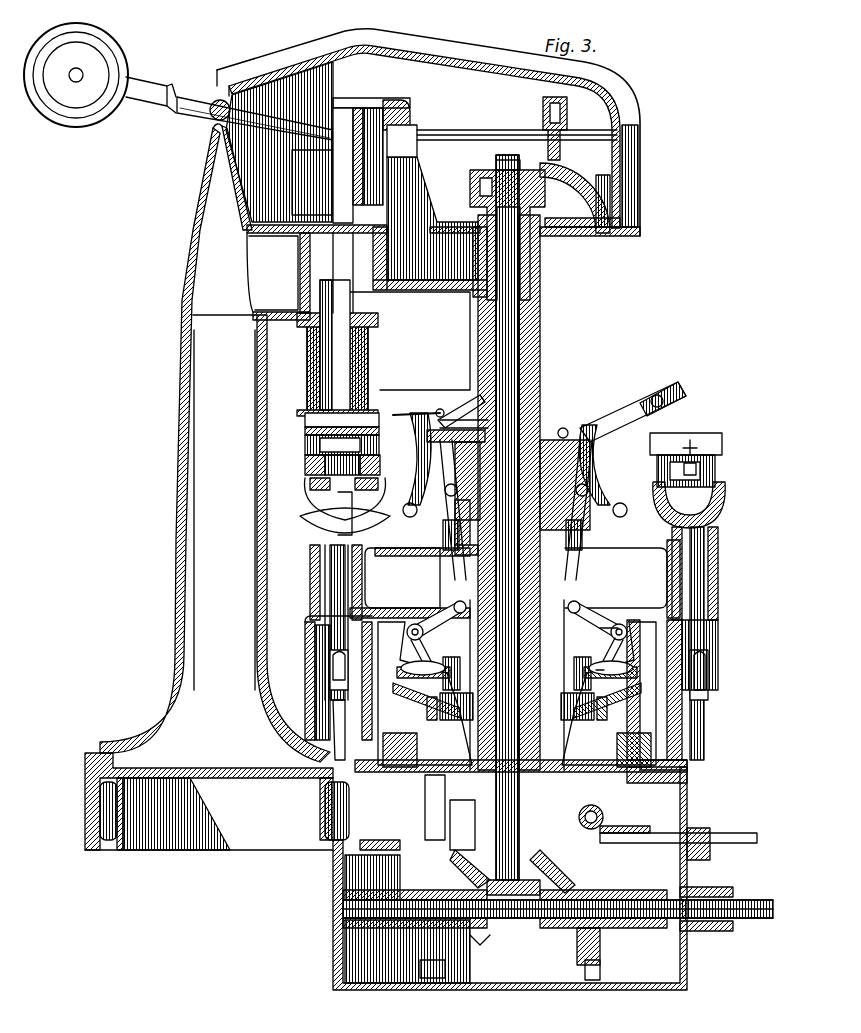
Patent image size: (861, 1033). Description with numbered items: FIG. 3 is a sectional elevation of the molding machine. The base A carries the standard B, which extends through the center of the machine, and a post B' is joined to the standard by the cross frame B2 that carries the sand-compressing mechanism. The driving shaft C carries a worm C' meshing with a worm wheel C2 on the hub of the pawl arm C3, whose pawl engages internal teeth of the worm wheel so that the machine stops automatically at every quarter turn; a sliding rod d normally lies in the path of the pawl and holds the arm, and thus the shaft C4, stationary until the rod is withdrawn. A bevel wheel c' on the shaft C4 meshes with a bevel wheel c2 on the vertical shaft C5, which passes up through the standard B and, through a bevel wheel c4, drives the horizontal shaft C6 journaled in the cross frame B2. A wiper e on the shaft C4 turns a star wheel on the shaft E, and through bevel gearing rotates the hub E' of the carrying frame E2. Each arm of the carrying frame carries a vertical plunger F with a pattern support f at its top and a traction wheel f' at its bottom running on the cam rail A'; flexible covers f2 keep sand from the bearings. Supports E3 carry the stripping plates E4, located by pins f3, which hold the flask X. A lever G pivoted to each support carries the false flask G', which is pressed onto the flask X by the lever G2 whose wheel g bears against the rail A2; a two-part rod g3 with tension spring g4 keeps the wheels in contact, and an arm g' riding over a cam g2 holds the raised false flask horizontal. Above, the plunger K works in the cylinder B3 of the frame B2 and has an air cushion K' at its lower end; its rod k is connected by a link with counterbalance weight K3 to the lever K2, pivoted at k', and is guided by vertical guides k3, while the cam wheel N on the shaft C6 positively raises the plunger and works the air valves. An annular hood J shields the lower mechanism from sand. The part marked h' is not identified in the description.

The counterbalance weight K3 is at (76, 75).
The lever K2 is at (192, 96).
The pivot k' is at (199, 124).
The vertical guides k3 is at (352, 170).
The standard B is at (370, 395).
The cam wheel N is at (430, 227).
The horizontal shaft C6 is at (494, 134).
The shaft C4 is at (545, 108).
The pawl arm C3 is at (481, 192).
The cylinder B3 is at (273, 273).
The rod k is at (349, 273).
The cross frame B2 is at (402, 340).
The plunger K is at (337, 348).
The air cushion K' is at (342, 406).
The false flask G' is at (484, 412).
The flask X is at (305, 432).
The stripping plates E4 is at (305, 462).
The supports E3 is at (312, 498).
The pattern support f is at (510, 513).
The flexible covers f2 is at (320, 522).
The pins f3 is at (688, 462).
The arm g' is at (418, 401).
The cam g2 is at (461, 402).
The tension spring g4 is at (464, 415).
The two-part rod g3 is at (506, 480).
The lever G is at (508, 465).
The hub E' is at (527, 602).
The vertical plunger F is at (325, 576).
The carrying frame E2 is at (515, 579).
The post B' is at (224, 510).
The annular hood J is at (308, 680).
The traction wheel f' is at (516, 679).
The dashpot rod h' is at (335, 730).
The lever G2 is at (600, 644).
The traction wheel g is at (593, 674).
The rail A2 is at (642, 690).
The cam rail A' is at (685, 696).
The vertical shaft C5 is at (509, 517).
The bevel wheel c4 is at (521, 686).
The bevel wheel c' is at (435, 807).
The driving shaft C is at (599, 883).
The worm C' is at (549, 882).
The base A is at (386, 871).
The sliding rod d is at (678, 841).
The shaft E is at (469, 825).
The bevel wheel c2 is at (468, 866).
The worm wheel C2 is at (576, 946).
The wiper e is at (416, 960).